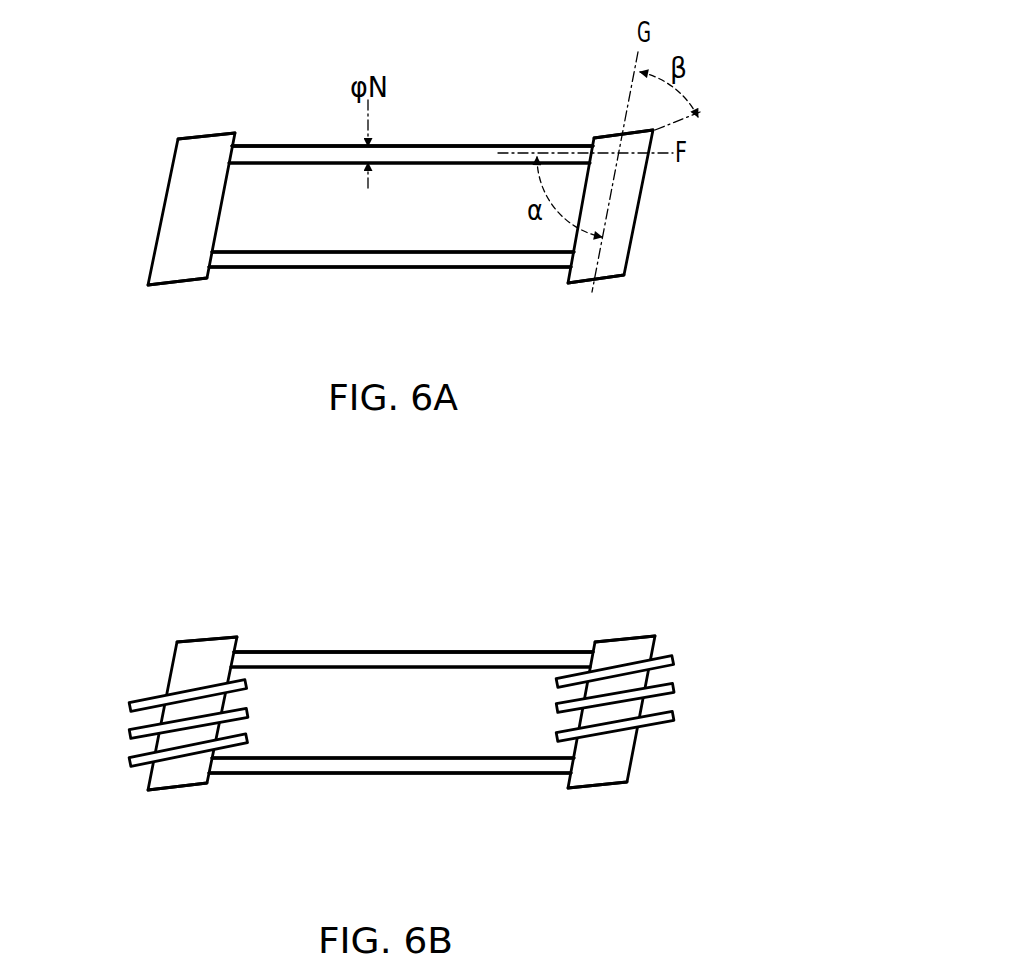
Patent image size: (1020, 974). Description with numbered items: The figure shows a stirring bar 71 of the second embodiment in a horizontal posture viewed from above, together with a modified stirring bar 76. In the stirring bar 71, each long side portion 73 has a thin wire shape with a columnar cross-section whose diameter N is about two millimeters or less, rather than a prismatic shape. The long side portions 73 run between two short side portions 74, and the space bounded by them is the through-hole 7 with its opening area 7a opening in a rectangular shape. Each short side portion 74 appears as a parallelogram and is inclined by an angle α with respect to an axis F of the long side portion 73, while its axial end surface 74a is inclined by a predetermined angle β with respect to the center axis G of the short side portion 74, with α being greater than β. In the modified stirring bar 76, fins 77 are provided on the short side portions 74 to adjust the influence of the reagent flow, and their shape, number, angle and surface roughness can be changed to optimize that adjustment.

In FIG. 6A, the through-hole 7 is at (372, 222).
In FIG. 6B, the through-hole 7 is at (388, 730).
In FIG. 6A, the opening area 7a is at (472, 217).
In FIG. 6B, the opening area 7a is at (487, 725).
In FIG. 6A, the long side portion 73 is at (340, 145).
In FIG. 6B, the long side portion 73 is at (335, 650).
In FIG. 6A, the short side portion 74 is at (173, 222).
In FIG. 6B, the short side portion 74 is at (185, 677).
In FIG. 6A, the axial end surface 74a is at (200, 135).
In FIG. 6B, the axial end surface 74a is at (205, 637).
In FIG. 6A, the stirring bar 71 is at (431, 134).
In FIG. 6B, the stirring bar 76 is at (434, 640).
In FIG. 6B, the fins 77 is at (130, 708).